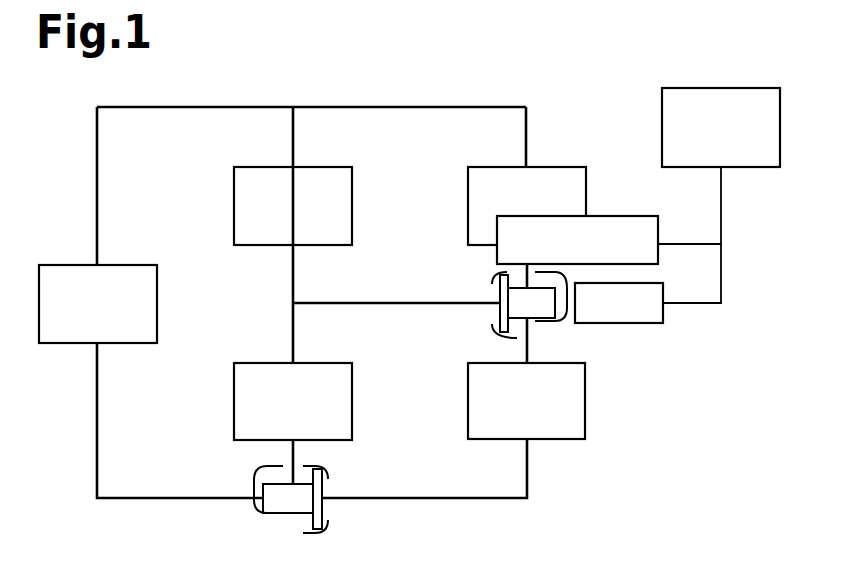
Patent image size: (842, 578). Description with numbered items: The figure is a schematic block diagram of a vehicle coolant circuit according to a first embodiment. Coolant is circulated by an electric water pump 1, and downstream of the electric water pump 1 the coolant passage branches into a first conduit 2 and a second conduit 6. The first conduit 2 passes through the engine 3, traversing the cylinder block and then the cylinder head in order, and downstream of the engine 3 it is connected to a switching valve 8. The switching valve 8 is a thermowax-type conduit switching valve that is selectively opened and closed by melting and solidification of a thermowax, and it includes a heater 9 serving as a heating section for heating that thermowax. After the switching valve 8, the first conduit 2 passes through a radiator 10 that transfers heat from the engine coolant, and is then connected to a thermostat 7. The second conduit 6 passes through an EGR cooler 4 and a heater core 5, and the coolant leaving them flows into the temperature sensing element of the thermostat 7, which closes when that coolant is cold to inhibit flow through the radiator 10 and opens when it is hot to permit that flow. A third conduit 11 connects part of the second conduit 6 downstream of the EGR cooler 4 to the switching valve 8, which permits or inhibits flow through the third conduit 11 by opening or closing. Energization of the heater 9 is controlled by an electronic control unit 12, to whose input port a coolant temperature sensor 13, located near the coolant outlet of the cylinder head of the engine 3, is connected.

The electric water pump 1 is at (38, 292).
The first conduit 2 is at (401, 107).
The engine 3 is at (467, 193).
The EGR cooler 4 is at (233, 192).
The heater core 5 is at (233, 389).
The second conduit 6 is at (294, 140).
The thermostat 7 is at (326, 530).
The switching valve 8 is at (492, 328).
The heater 9 is at (648, 324).
The radiator 10 is at (588, 417).
The third conduit 11 is at (402, 302).
The electronic control unit 12 is at (661, 112).
The coolant temperature sensor 13 is at (611, 216).